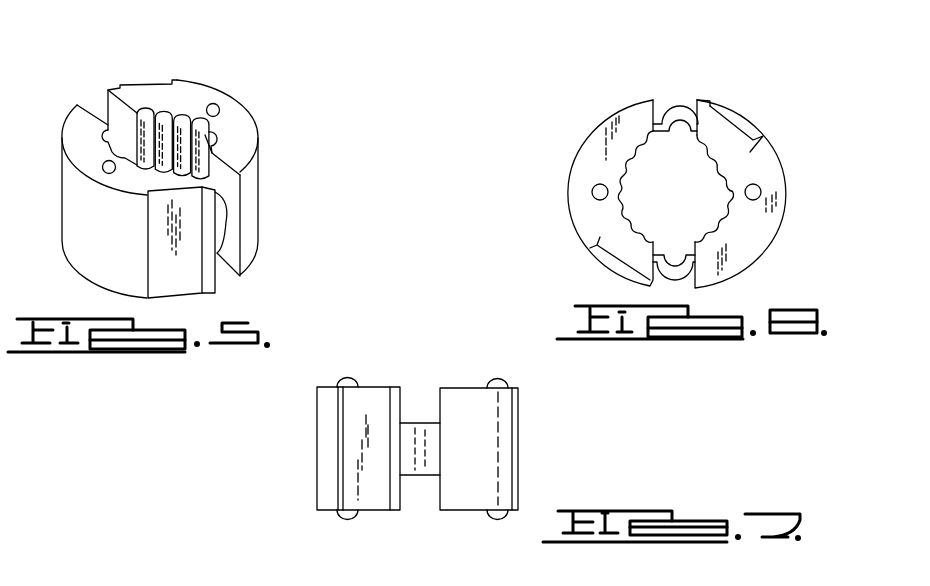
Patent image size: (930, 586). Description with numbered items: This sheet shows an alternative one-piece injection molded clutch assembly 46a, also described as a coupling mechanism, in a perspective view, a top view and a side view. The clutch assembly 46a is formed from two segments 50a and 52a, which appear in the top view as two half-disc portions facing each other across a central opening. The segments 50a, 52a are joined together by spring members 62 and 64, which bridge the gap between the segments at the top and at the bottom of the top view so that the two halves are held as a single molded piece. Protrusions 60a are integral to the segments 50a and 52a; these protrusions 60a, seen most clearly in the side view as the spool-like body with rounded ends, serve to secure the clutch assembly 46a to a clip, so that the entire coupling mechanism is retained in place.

In FIG. 5, the clutch assembly 46a is at (109, 76).
In FIG. 6, the segment 50a is at (588, 156).
In FIG. 6, the segment 52a is at (750, 152).
In FIG. 6, the spring member 62 is at (674, 106).
In FIG. 6, the spring member 64 is at (667, 282).
In FIG. 7, the protrusions 60a is at (487, 382).